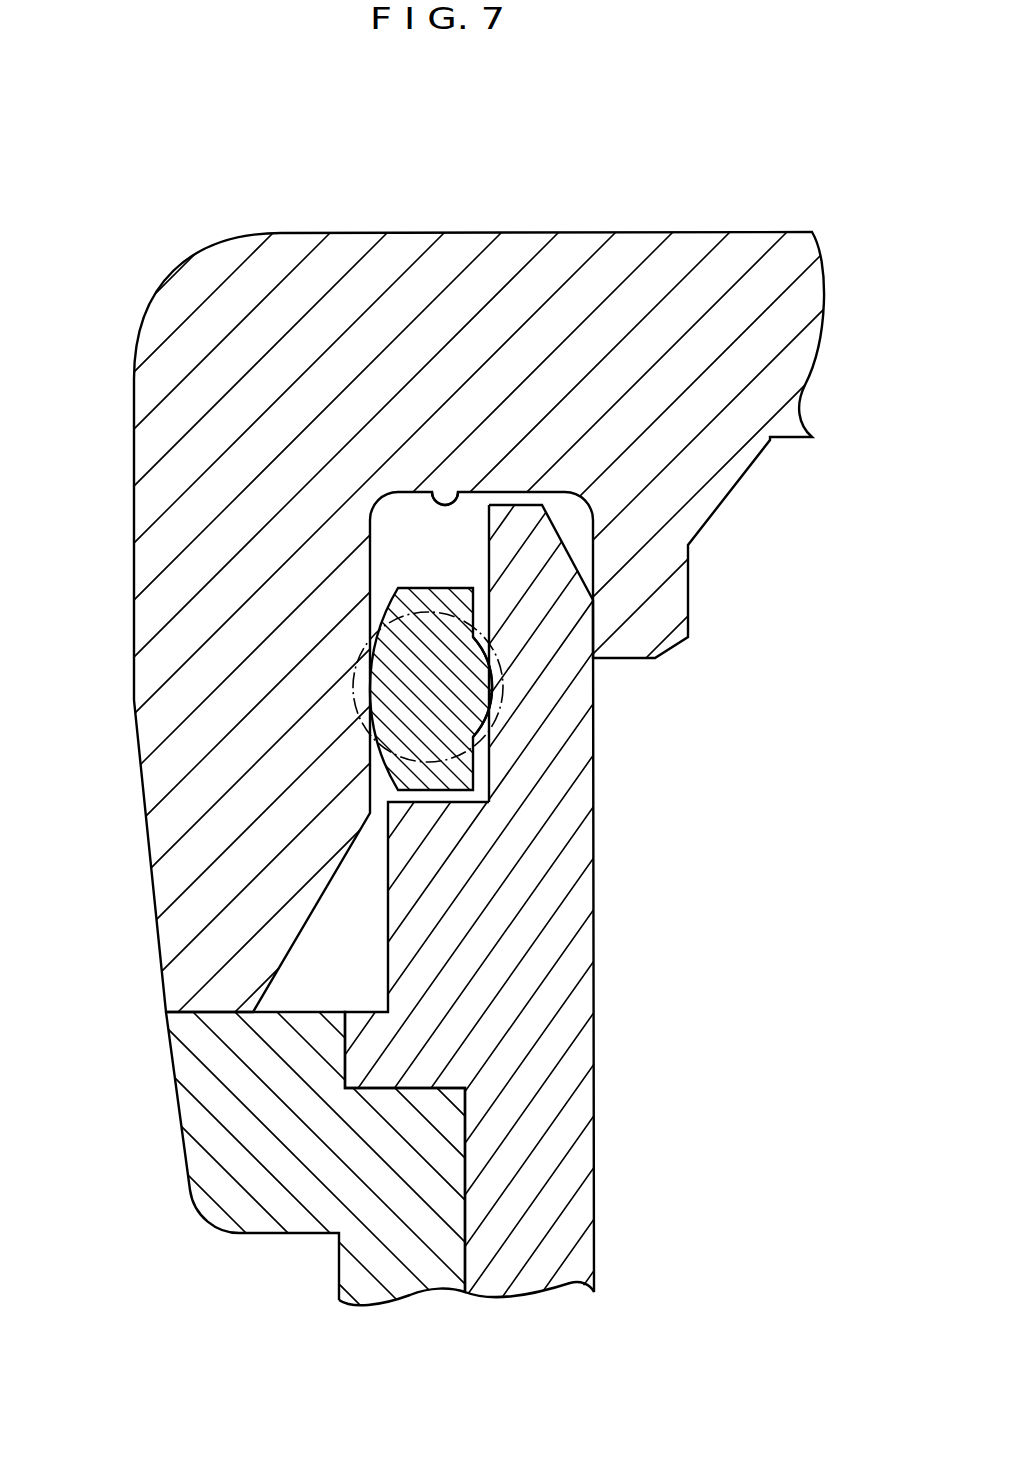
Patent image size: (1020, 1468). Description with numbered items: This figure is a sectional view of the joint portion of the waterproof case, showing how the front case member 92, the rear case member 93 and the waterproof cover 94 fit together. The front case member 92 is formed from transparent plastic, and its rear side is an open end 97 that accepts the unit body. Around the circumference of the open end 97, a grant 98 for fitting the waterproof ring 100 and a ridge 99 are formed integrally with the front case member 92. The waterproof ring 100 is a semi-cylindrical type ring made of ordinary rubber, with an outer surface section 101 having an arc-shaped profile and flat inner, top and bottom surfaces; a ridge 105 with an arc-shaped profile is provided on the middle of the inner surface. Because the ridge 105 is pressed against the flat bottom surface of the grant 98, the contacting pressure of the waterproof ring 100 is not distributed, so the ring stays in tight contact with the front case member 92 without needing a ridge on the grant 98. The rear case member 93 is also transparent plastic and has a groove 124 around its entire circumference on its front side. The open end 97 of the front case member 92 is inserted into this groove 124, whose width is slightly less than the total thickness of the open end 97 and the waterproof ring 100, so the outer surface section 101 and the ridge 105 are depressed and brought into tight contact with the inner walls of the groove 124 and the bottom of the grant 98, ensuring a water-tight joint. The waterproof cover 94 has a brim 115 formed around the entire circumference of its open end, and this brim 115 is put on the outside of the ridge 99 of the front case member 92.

The rear case member 93 is at (703, 232).
The front case member 92 is at (598, 1141).
The open end 97 is at (523, 505).
The grant 98 is at (489, 505).
The groove 124 is at (423, 490).
The waterproof ring 100 is at (437, 588).
The outer surface section 101 is at (353, 697).
The ridge 105 is at (500, 689).
The ridge 99 is at (345, 1050).
The brim 115 is at (183, 1155).
The waterproof cover 94 is at (338, 1268).